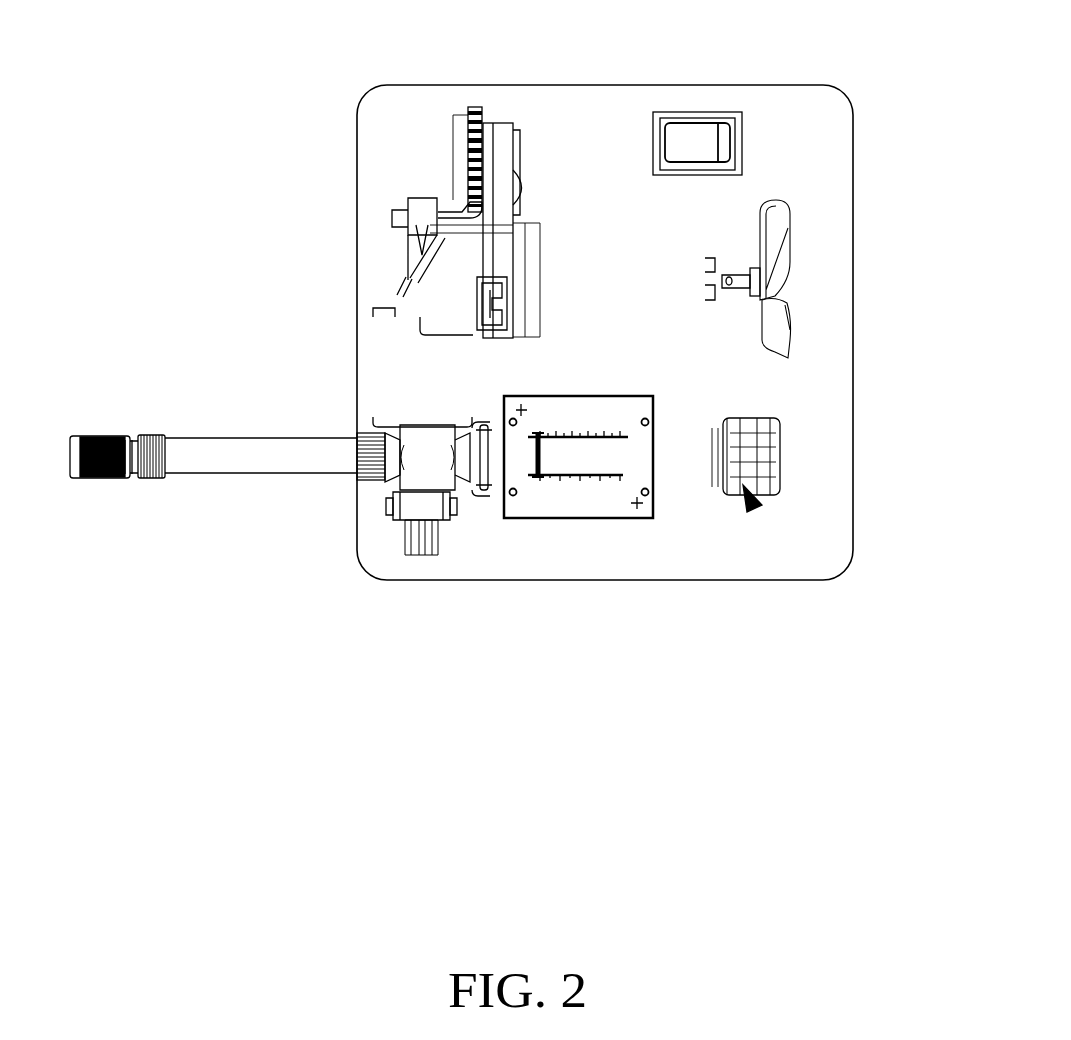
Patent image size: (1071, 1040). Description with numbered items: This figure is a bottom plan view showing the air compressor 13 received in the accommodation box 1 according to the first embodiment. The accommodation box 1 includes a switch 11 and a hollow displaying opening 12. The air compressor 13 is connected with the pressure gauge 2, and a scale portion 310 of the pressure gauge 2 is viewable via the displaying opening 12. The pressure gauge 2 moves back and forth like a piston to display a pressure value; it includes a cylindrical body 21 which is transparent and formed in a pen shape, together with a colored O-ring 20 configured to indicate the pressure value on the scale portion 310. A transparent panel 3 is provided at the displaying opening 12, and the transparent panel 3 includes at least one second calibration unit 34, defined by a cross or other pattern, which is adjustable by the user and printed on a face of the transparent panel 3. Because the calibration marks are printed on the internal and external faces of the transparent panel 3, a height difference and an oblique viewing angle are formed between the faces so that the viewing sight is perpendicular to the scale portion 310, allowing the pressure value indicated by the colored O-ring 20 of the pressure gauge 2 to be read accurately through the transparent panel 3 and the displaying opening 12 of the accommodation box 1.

The accommodation box 1 is at (357, 522).
The pressure gauge 2 is at (750, 554).
The transparent panel 3 is at (588, 531).
The switch 11 is at (697, 137).
The hollow displaying opening 12 is at (582, 518).
The air compressor 13 is at (398, 223).
The colored O-ring 20 is at (537, 478).
The cylindrical body 21 is at (695, 477).
The second calibration unit 34 is at (643, 513).
The scale portion 310 is at (557, 418).